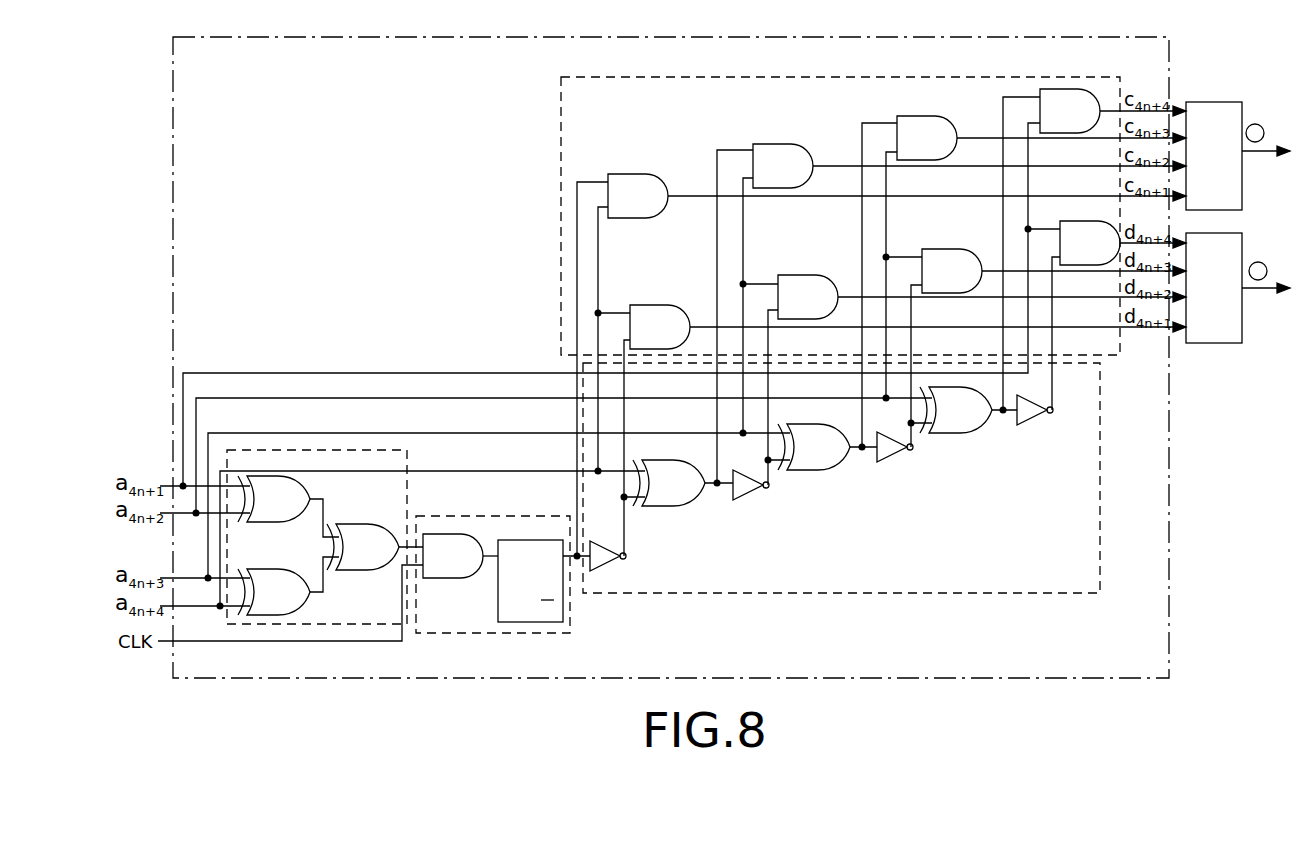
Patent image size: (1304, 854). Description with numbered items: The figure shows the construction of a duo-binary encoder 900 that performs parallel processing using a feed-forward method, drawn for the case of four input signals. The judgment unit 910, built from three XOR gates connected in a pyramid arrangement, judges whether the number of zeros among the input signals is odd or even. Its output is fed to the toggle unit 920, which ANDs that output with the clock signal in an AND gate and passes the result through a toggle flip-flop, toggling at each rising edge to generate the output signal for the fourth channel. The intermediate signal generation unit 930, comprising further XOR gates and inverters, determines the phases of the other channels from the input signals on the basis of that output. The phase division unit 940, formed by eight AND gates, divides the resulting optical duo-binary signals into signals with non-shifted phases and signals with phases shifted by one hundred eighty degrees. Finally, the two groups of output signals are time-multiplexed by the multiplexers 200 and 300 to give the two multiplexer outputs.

The duo-binary encoder 900 is at (665, 37).
The judgment unit 910 is at (310, 624).
The toggle unit 920 is at (490, 516).
The intermediate signal generation unit 930 is at (1100, 478).
The phase division unit 940 is at (855, 77).
The multiplexer 200 is at (1215, 101).
The multiplexer 300 is at (1220, 343).